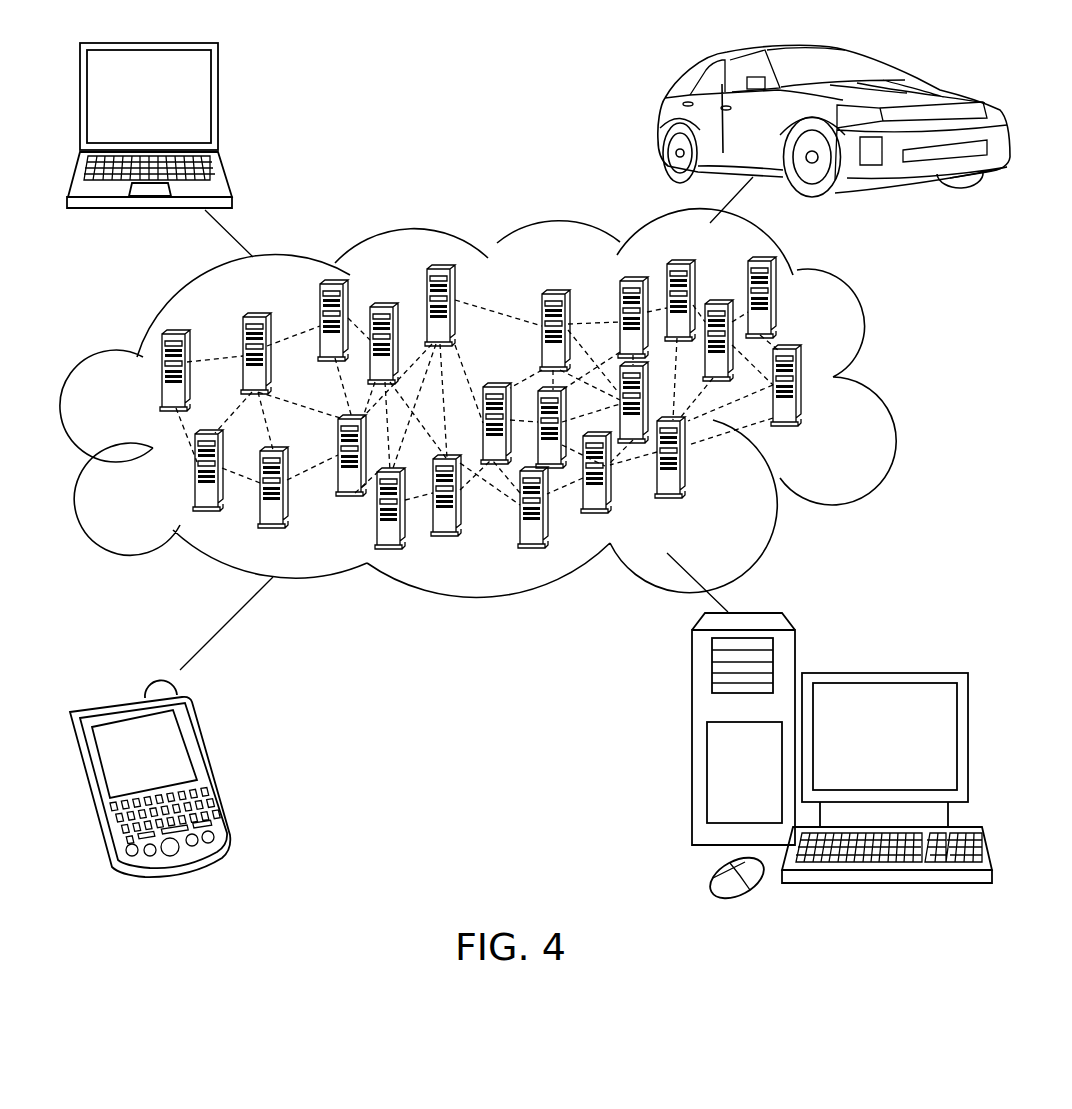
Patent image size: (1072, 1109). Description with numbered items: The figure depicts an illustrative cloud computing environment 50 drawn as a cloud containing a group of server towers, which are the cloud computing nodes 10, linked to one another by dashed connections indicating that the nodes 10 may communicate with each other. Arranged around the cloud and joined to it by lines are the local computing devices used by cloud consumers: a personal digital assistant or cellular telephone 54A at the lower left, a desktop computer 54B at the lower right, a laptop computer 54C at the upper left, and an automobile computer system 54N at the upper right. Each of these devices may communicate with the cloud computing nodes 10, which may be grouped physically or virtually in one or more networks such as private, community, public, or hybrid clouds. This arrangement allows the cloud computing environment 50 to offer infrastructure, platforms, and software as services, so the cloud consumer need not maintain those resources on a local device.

The cloud computing nodes 10 is at (823, 411).
The cloud computing environment 50 is at (883, 382).
The personal digital assistant or cellular telephone 54A is at (210, 767).
The desktop computer 54B is at (880, 672).
The laptop computer 54C is at (218, 106).
The automobile computer system 54N is at (658, 120).